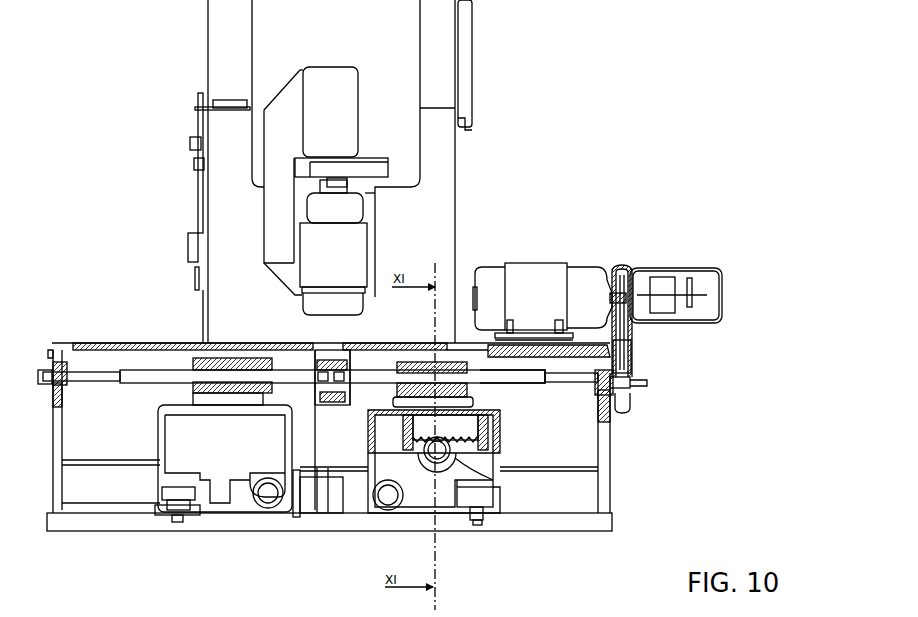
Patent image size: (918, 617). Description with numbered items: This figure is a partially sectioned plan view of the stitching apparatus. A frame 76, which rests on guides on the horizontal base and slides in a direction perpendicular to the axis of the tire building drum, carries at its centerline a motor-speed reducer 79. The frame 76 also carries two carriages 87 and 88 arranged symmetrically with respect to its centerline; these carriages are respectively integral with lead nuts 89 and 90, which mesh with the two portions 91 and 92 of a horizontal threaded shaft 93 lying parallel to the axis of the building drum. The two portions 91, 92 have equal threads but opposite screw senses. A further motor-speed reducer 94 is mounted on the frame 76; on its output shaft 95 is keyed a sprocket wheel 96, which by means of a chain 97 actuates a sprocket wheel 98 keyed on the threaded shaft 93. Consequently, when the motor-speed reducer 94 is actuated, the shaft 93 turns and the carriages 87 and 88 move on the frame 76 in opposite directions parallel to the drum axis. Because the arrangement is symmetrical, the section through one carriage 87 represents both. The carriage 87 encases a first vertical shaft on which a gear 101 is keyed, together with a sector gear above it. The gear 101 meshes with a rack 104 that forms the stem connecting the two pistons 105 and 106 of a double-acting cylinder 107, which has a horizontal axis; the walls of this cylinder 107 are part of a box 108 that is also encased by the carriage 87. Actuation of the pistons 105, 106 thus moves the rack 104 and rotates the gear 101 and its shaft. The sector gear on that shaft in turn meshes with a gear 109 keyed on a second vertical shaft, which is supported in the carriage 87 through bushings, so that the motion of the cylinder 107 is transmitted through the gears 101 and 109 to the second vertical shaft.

The frame 76 is at (337, 350).
The motor-speed reducer 79 is at (360, 245).
The carriage 87 is at (470, 477).
The carriage 88 is at (162, 482).
The lead nut 89 is at (388, 362).
The lead nut 90 is at (275, 358).
The portion of threaded shaft 91 is at (545, 383).
The portion of threaded shaft 92 is at (130, 380).
The horizontal threaded shaft 93 is at (583, 388).
The motor-speed reducer 94 is at (578, 275).
The output shaft 95 is at (627, 270).
The sprocket wheel 96 is at (632, 323).
The chain 97 is at (632, 357).
The sprocket wheel 98 is at (630, 407).
The gear 101 is at (435, 468).
The rack 104 is at (487, 440).
The piston 105 is at (403, 420).
The piston 106 is at (485, 417).
The double-acting cylinder 107 is at (368, 417).
The box 108 is at (468, 458).
The gear 109 is at (397, 497).